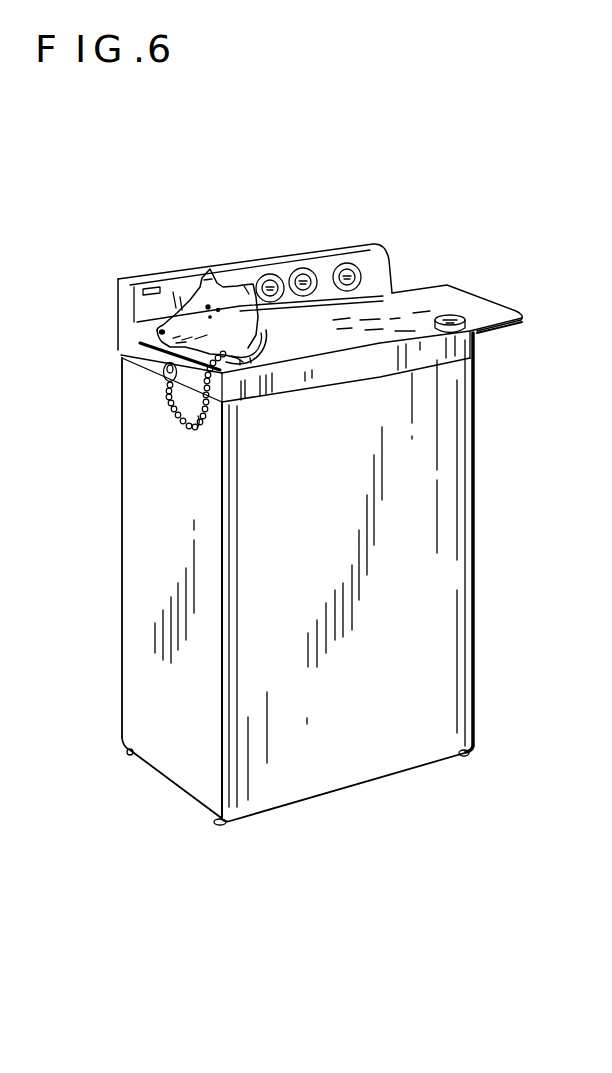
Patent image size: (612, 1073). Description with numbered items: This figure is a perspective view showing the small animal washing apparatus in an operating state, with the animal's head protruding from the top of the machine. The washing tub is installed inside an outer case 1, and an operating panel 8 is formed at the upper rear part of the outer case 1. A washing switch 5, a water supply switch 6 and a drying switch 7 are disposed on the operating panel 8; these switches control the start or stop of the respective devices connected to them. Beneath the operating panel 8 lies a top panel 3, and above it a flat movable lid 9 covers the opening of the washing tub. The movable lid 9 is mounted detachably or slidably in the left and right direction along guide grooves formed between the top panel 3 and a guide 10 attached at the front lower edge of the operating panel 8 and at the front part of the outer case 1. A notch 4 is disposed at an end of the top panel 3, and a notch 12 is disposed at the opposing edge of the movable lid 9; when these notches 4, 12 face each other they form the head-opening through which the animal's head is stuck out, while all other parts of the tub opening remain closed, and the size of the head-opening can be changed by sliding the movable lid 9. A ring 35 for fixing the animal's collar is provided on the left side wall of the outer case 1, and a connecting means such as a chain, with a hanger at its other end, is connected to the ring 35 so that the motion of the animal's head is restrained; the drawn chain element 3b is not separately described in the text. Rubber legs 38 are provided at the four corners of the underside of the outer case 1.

The outer case 1 is at (324, 608).
The top panel 3 is at (177, 426).
The chain loop end 3b is at (196, 430).
The notch 4 is at (254, 352).
The washing switch 5 is at (284, 275).
The water supply switch 6 is at (318, 262).
The drying switch 7 is at (367, 250).
The operating panel 8 is at (165, 274).
The movable lid 9 is at (321, 348).
The guide 10 is at (343, 350).
The notch 12 is at (285, 352).
The ring 35 is at (158, 384).
The rubber legs 38 is at (222, 826).